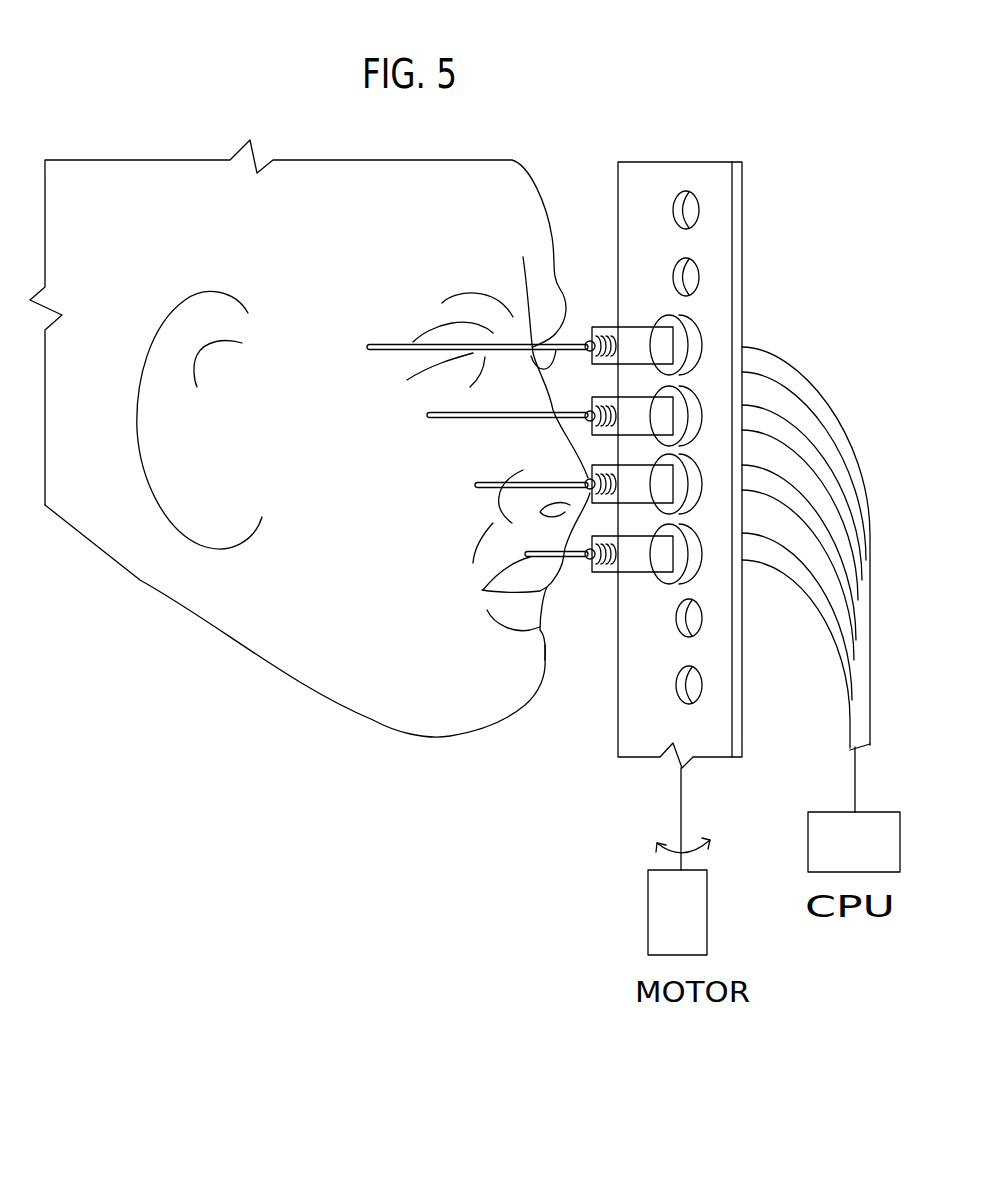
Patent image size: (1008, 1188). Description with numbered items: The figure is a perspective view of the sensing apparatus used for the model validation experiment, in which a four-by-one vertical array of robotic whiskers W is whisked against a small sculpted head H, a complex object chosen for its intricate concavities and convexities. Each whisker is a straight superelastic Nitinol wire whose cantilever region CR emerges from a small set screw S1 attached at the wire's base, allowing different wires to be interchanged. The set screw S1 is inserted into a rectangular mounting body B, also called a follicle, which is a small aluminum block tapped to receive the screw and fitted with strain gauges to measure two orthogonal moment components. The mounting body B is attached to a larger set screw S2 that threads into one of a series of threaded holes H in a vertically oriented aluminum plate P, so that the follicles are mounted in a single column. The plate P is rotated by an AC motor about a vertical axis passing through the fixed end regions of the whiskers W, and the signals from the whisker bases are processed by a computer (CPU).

The sculpted head H is at (200, 192).
The cantilever region CR is at (498, 446).
The robotic whiskers W is at (392, 353).
The set screw S1 is at (600, 365).
The mounting body B is at (630, 336).
The aluminum plate P is at (713, 248).
The larger set screw S2 is at (693, 335).